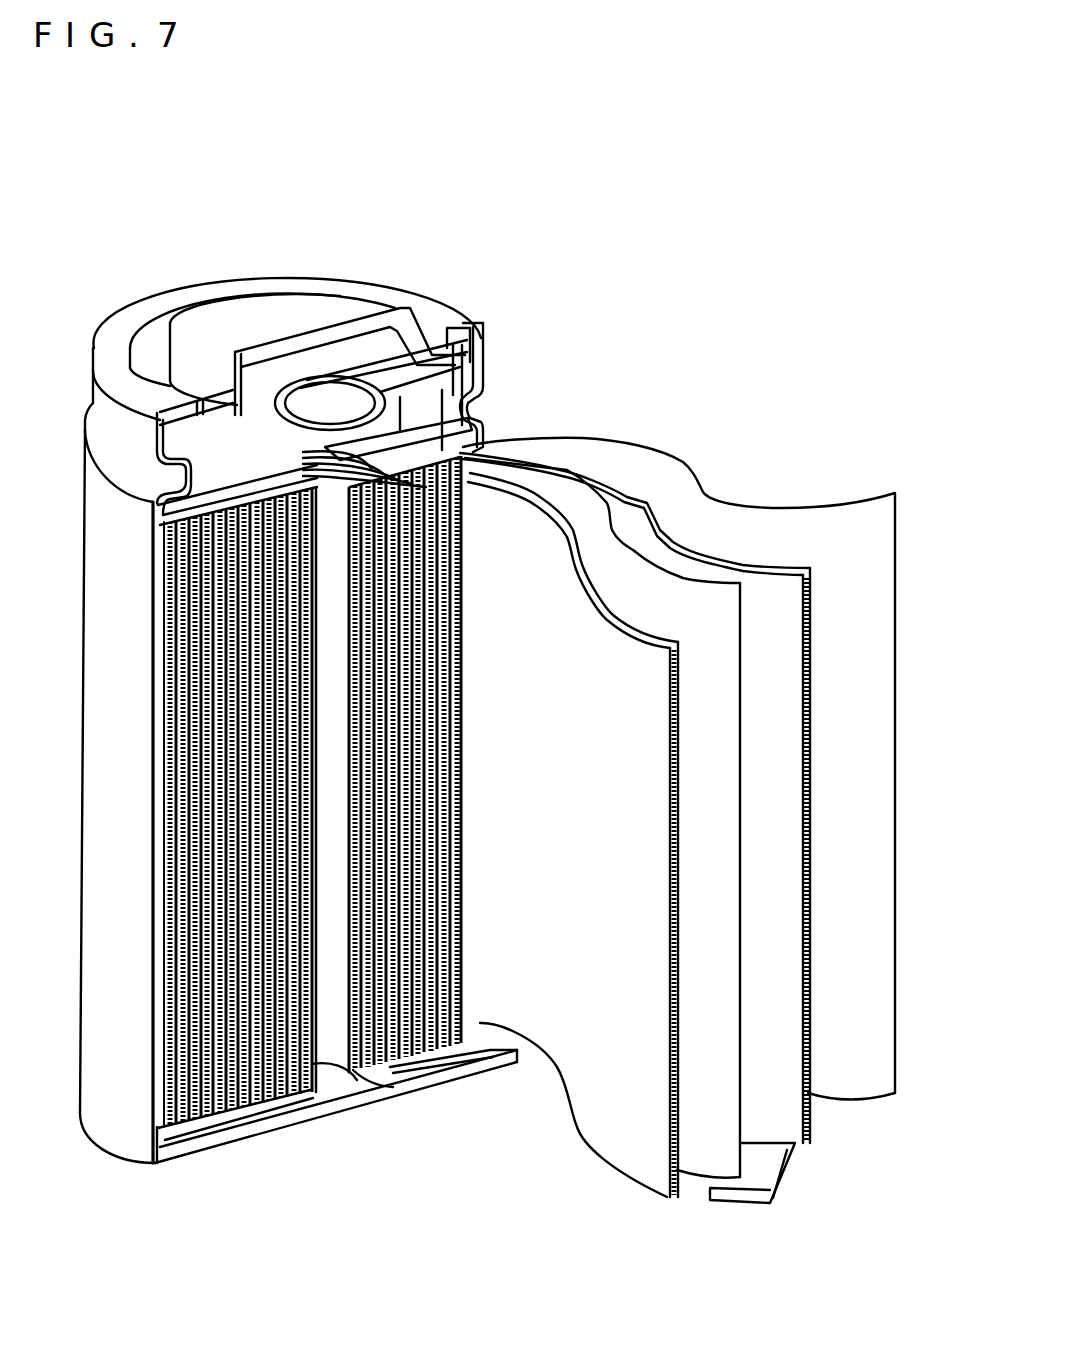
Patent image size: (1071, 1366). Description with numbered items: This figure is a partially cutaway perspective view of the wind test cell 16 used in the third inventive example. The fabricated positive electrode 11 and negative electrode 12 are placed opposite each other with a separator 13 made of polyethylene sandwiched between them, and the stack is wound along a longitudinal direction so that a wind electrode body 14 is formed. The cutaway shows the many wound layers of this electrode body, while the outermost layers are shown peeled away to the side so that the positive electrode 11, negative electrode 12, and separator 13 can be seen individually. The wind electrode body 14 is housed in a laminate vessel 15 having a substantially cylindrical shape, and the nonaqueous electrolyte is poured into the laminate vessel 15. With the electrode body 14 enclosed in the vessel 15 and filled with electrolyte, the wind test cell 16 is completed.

The positive electrode 11 is at (628, 1168).
The negative electrode 12 is at (785, 1127).
The separator 13 is at (710, 1162).
The wind electrode body 14 is at (530, 413).
The laminate vessel 15 is at (483, 337).
The wind test cell 16 is at (615, 277).